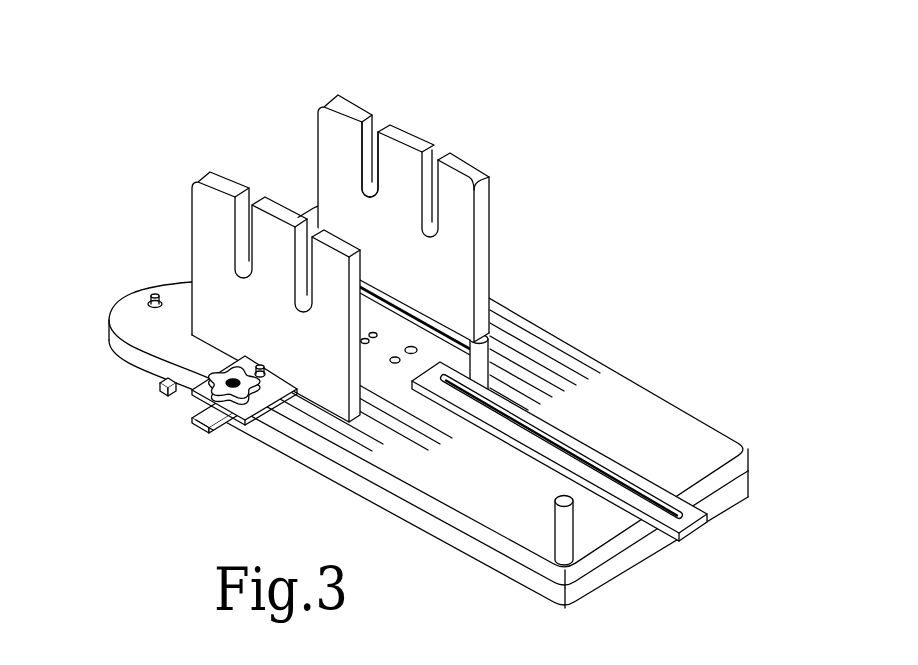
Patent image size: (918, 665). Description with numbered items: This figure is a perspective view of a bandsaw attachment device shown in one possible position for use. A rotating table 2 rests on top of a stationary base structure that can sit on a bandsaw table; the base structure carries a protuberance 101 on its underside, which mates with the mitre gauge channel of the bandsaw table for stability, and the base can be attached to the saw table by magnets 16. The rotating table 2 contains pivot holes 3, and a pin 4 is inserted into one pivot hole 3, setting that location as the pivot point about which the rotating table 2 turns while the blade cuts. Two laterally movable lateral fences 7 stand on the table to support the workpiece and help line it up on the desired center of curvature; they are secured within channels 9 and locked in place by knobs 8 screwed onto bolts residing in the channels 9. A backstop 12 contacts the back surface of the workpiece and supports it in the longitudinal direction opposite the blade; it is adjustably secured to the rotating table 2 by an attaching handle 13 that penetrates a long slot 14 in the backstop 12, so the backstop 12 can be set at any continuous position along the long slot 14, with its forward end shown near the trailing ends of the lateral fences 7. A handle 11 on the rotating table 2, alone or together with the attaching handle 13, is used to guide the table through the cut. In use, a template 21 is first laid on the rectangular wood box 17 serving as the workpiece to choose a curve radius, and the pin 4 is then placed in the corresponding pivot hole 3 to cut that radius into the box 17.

The rotating table 2 is at (660, 433).
The template 21 is at (502, 568).
The pivot holes 3 is at (405, 330).
The pin 4 is at (398, 362).
The lateral fences 7 is at (200, 192).
The rectangular wood box 17 is at (370, 128).
The knobs 8 is at (226, 375).
The channels 9 is at (204, 430).
The protuberance 101 is at (165, 394).
The magnets 16 is at (154, 296).
The handle 11 is at (565, 548).
The backstop 12 is at (705, 516).
The attaching handle 13 is at (483, 335).
The long slot 14 is at (655, 512).